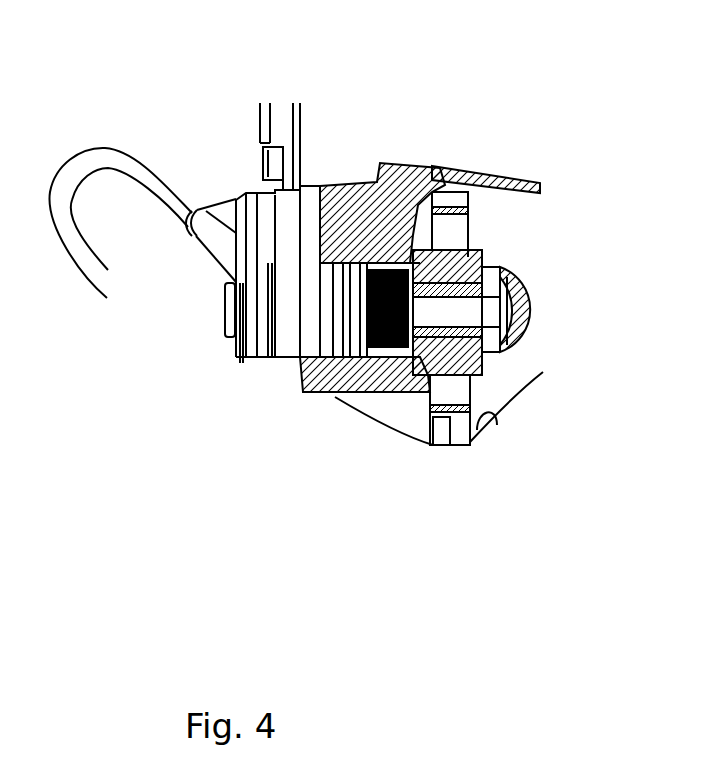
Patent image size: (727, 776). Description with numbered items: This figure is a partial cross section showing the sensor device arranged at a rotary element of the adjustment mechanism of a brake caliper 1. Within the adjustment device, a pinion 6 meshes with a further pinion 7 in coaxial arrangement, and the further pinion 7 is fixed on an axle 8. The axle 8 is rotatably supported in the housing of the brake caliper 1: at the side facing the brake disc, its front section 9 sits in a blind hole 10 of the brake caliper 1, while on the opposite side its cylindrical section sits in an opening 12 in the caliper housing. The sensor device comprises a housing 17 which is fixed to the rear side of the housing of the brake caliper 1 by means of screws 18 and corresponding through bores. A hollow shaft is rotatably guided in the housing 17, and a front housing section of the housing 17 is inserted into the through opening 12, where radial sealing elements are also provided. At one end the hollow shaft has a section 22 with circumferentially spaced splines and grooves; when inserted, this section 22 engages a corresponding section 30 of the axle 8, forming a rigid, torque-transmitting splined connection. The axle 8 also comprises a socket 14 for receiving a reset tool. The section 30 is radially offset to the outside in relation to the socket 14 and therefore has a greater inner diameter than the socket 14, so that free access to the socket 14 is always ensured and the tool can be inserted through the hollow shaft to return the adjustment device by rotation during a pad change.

The brake caliper 1 is at (404, 170).
The pinion 6 is at (441, 425).
The further pinion 7 is at (470, 212).
The axle 8 is at (490, 273).
The front section 9 is at (488, 350).
The blind hole 10 is at (508, 310).
The opening 12 is at (356, 265).
The socket 14 is at (437, 313).
The housing 17 is at (286, 345).
The screws 18 is at (272, 165).
The section 22 is at (363, 353).
The section 30 is at (417, 360).